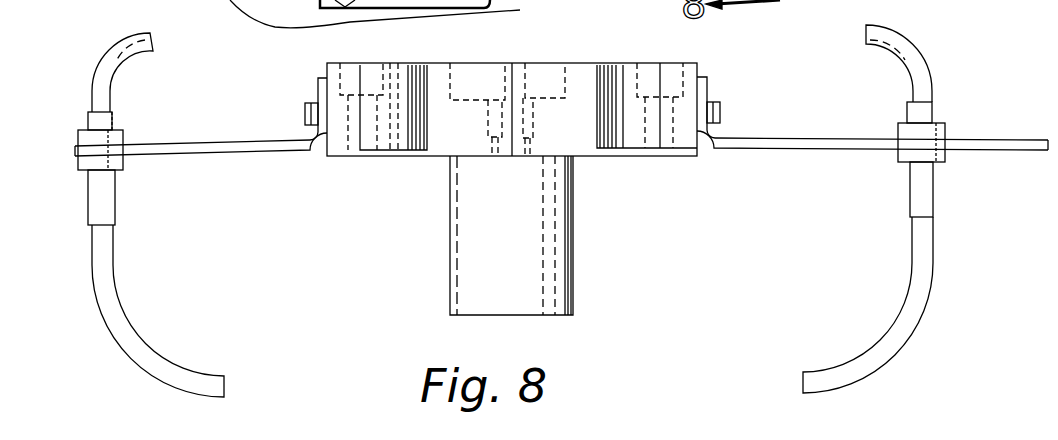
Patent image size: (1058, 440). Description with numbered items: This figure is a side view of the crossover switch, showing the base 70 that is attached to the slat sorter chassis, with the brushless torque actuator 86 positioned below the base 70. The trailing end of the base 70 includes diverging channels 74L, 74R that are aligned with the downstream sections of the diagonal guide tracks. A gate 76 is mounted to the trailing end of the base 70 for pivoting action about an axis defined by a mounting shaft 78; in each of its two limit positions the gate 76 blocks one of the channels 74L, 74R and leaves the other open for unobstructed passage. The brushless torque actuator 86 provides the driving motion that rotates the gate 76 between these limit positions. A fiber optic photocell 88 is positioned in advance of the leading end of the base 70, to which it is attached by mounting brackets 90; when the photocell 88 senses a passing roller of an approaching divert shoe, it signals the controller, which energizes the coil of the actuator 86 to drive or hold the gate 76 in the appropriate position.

The base 70 is at (445, 142).
The diverging channel 74R is at (390, 132).
The diverging channel 74L is at (632, 127).
The gate 76 is at (538, 85).
The mounting shaft 78 is at (505, 86).
The brushless torque actuator 86 is at (560, 268).
The fiber optic photocell 88 is at (153, 37).
The mounting brackets 90 is at (830, 148).